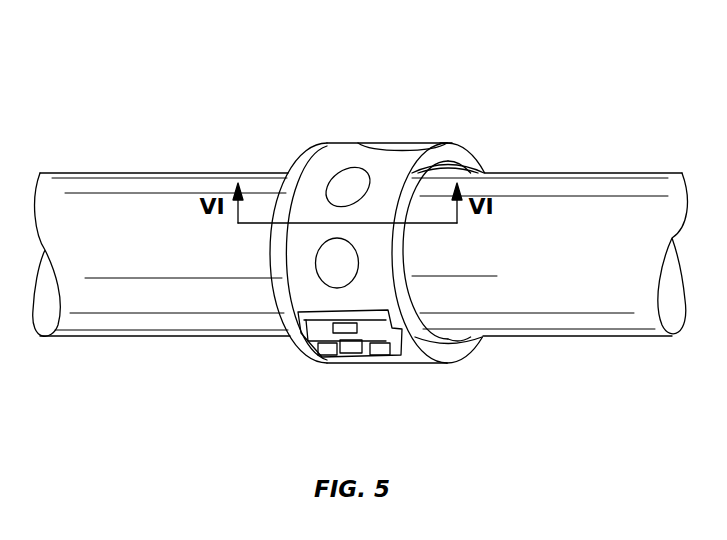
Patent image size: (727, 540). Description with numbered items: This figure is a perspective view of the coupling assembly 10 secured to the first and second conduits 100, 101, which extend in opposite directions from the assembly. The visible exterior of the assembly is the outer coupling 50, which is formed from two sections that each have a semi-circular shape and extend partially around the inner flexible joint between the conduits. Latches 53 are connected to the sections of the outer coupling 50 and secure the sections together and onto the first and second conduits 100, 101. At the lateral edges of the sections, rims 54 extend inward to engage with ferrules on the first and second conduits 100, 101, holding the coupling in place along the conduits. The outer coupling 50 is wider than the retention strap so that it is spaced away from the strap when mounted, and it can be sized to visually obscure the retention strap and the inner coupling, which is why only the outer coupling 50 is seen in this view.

The coupling assembly 10 is at (243, 93).
The outer coupling 50 is at (307, 197).
The latches 53 is at (338, 342).
The rims 54 is at (450, 146).
The first conduit 100 is at (163, 323).
The second conduit 101 is at (578, 322).